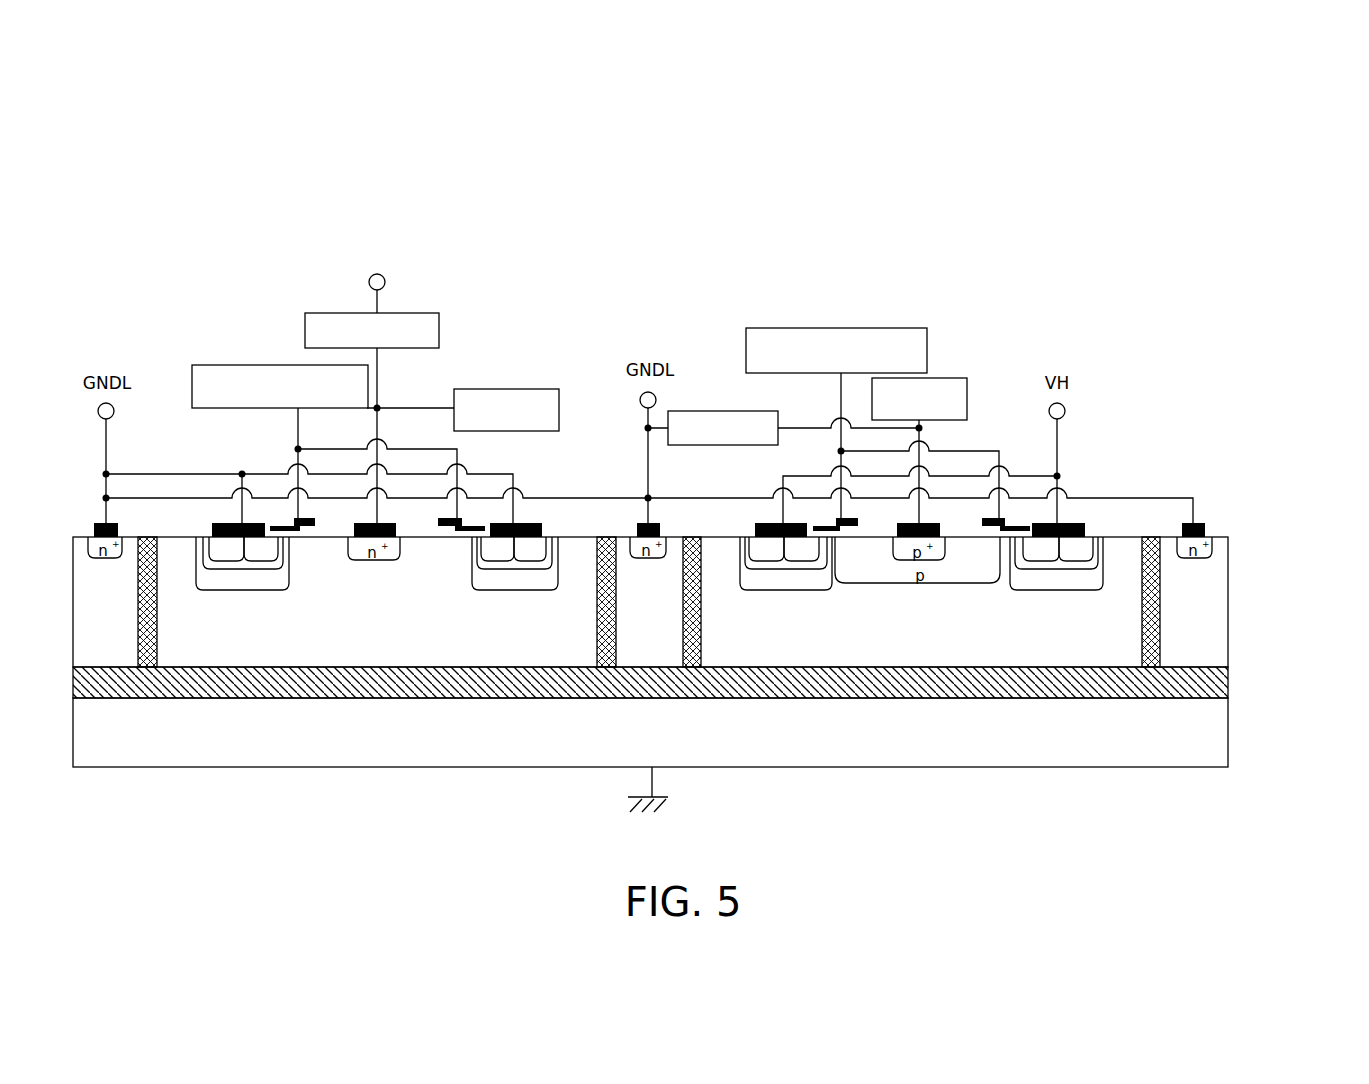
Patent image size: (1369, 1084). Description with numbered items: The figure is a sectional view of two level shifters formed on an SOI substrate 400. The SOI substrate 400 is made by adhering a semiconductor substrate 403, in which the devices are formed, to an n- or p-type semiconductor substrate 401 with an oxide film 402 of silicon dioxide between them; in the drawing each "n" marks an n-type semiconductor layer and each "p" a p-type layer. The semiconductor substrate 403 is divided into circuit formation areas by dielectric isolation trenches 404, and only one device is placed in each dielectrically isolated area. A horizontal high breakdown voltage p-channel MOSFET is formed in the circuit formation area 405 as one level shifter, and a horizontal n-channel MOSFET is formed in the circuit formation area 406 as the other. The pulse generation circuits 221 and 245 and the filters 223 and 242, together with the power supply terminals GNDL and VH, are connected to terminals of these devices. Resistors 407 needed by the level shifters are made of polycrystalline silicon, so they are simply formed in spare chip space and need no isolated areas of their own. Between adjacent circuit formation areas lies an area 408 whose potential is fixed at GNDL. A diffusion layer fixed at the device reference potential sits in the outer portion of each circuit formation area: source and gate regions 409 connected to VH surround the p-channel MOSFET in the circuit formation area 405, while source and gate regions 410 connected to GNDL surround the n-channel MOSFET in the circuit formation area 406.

The SOI substrate 400 is at (1277, 540).
The semiconductor substrate 401 is at (1200, 742).
The oxide film 402 is at (1217, 685).
The semiconductor substrate 403 is at (1210, 590).
The dielectric isolation trench 404 is at (153, 537).
The circuit formation area 405 is at (1140, 277).
The circuit formation area 406 is at (600, 277).
The resistor 407 is at (402, 313).
The area fixed at GNDL 408 is at (152, 277).
The source and gate regions 409 is at (740, 590).
The source and gate regions 410 is at (289, 590).
The pulse generation circuit 221 is at (846, 328).
The filter 223 is at (515, 389).
The filter 242 is at (933, 378).
The pulse generation circuit 245 is at (292, 365).